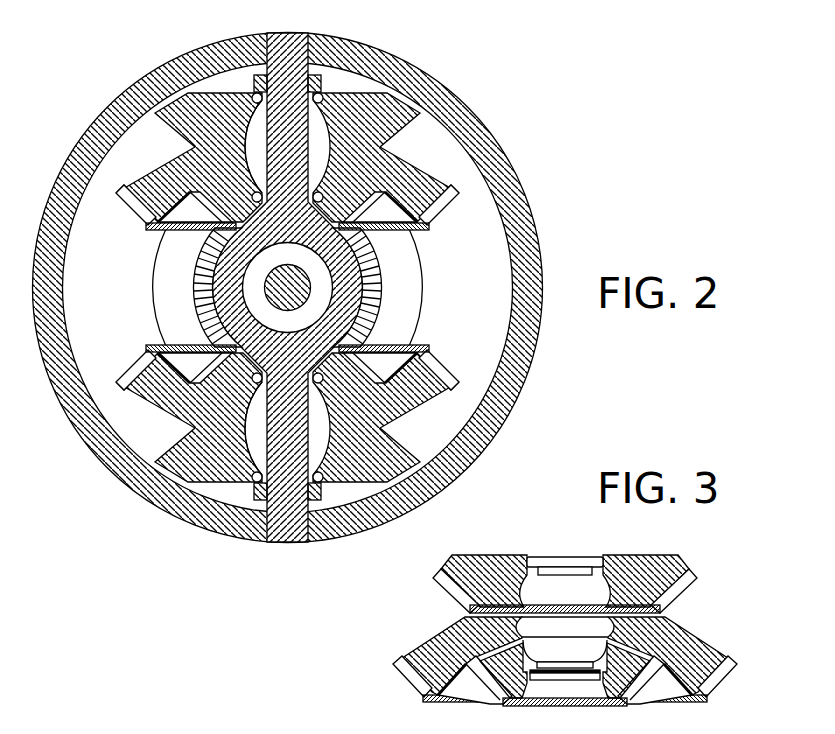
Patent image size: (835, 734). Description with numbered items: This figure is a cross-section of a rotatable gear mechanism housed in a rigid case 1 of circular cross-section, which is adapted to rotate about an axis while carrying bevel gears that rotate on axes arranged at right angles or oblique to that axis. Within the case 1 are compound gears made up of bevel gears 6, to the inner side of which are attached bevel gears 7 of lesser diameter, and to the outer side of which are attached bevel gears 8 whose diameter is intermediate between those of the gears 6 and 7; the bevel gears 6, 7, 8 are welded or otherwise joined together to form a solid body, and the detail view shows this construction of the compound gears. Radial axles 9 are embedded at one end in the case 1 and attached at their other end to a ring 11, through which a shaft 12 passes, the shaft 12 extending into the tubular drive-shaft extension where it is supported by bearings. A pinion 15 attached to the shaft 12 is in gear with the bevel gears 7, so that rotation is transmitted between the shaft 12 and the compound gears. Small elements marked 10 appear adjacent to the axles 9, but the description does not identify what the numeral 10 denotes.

In FIG. 2, the rigid case 1 is at (50, 328).
In FIG. 2, the bevel gears 6 is at (147, 202).
In FIG. 3, the bevel gears 6 is at (425, 675).
In FIG. 2, the bevel gears of lesser diameter 7 is at (210, 198).
In FIG. 3, the bevel gears of lesser diameter 7 is at (503, 682).
In FIG. 2, the bevel gears of intermediate diameter 8 is at (193, 122).
In FIG. 3, the bevel gears of intermediate diameter 8 is at (470, 588).
In FIG. 2, the radial axles 9 is at (277, 168).
In FIG. 2, the locking ball and block 10 is at (320, 97).
In FIG. 2, the ring 11 is at (230, 268).
In FIG. 2, the shaft 12 is at (297, 295).
In FIG. 2, the pinion 15 is at (203, 262).